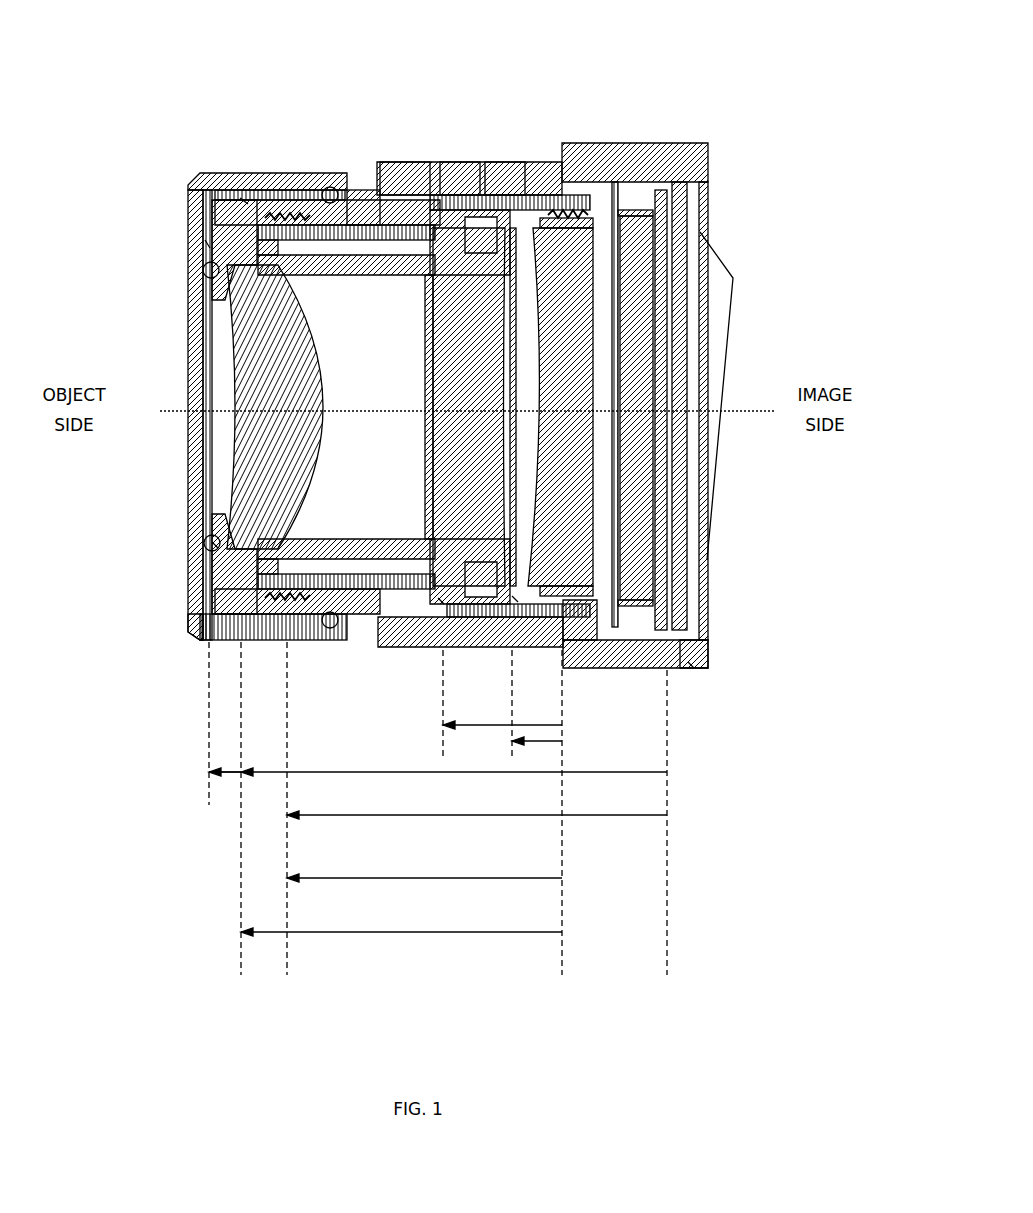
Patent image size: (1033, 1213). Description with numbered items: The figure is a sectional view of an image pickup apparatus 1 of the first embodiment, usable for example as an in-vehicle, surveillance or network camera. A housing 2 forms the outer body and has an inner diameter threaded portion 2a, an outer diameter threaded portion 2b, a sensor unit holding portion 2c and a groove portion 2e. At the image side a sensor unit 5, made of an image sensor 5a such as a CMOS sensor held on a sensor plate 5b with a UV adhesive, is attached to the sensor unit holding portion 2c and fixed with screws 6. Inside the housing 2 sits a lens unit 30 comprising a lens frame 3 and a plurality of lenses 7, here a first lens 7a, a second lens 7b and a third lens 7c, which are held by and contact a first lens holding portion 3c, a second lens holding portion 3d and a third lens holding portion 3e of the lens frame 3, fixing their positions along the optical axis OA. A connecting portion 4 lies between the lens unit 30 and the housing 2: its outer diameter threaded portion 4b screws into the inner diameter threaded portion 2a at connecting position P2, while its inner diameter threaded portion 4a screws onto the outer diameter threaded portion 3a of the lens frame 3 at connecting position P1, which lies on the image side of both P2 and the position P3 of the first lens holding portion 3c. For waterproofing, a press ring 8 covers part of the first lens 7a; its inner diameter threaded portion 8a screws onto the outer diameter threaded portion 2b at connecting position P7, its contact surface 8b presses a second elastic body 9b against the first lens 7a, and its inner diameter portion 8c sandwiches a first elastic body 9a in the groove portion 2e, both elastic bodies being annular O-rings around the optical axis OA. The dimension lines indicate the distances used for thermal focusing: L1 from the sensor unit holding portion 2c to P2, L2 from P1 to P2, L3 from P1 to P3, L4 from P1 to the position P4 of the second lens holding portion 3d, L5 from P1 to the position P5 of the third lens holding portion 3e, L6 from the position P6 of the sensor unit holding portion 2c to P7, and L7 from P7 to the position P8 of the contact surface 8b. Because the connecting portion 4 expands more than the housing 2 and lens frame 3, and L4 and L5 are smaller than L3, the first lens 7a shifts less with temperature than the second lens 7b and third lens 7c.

The image pickup apparatus 1 is at (786, 31).
The housing 2 is at (625, 660).
The inner diameter threaded portion 2a is at (282, 641).
The outer diameter threaded portion 2b is at (208, 642).
The sensor unit holding portion 2c is at (690, 665).
The groove portion 2e is at (312, 641).
The lens frame 3 is at (533, 223).
The outer diameter threaded portion 3a is at (596, 660).
The first lens holding portion 3c is at (215, 545).
The second lens holding portion 3d is at (440, 600).
The third lens holding portion 3e is at (515, 598).
The connecting portion 4 is at (293, 213).
The inner diameter threaded portion 4a is at (560, 640).
The outer diameter threaded portion 4b is at (268, 205).
The sensor unit 5 is at (665, 83).
The image sensor 5a is at (647, 240).
The sensor plate 5b is at (700, 232).
The screws 6 is at (727, 396).
The lenses 7 is at (510, 114).
The first lens 7a is at (398, 175).
The second lens 7b is at (463, 290).
The third lens 7c is at (518, 232).
The press ring 8 is at (200, 183).
The inner diameter threaded portion 8a is at (245, 200).
The contact surface 8b is at (207, 245).
The inner diameter portion 8c is at (308, 190).
The first elastic body 9a is at (333, 628).
The second elastic body 9b is at (212, 549).
The lens unit 30 is at (538, 64).
The connecting position P1 is at (565, 215).
The connecting position P2 is at (290, 218).
The position of the first lens holding portion P3 is at (215, 545).
The position of the second lens holding portion P4 is at (441, 601).
The position of the third lens holding portion P5 is at (515, 599).
The position of the sensor unit holding portion P6 is at (691, 665).
The connecting position P7 is at (244, 201).
The position of the contact surface P8 is at (207, 244).
The optical axis OA is at (163, 402).
The distance L1 is at (477, 827).
The distance L2 is at (424, 889).
The distance L3 is at (401, 943).
The distance L4 is at (502, 736).
The distance L5 is at (537, 753).
The distance L6 is at (438, 783).
The distance L7 is at (225, 789).